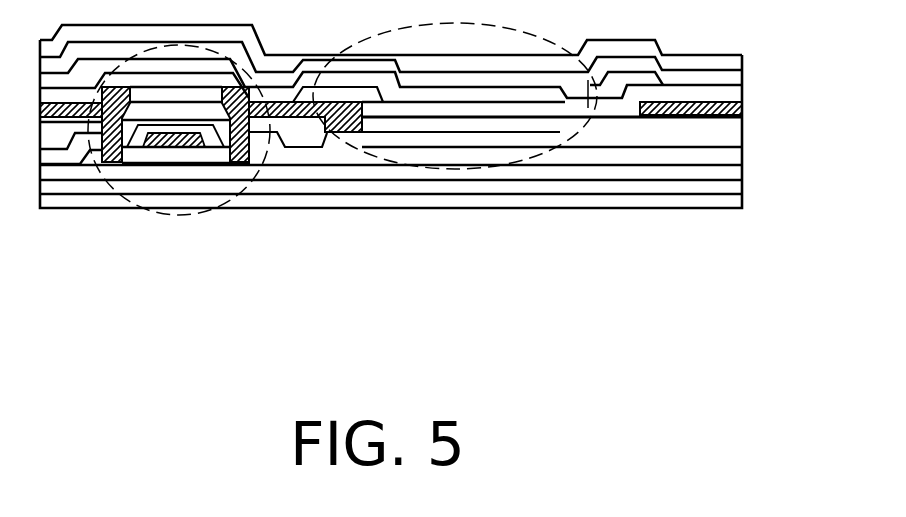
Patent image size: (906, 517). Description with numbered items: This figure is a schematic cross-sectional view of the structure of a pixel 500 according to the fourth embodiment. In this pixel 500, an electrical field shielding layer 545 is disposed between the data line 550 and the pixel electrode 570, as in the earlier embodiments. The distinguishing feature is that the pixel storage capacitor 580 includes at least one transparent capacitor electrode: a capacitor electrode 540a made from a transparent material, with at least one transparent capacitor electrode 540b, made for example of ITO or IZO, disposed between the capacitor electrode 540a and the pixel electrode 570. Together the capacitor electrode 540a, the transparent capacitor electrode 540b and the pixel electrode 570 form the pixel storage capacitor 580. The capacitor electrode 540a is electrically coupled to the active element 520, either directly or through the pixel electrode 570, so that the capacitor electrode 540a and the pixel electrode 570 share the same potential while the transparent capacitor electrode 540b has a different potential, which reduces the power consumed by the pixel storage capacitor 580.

The pixel 500 is at (812, 326).
The active element 520 is at (176, 200).
The electrical field shielding layer 545 is at (90, 200).
The data line 550 is at (705, 117).
The pixel electrode 570 is at (395, 56).
The pixel storage capacitor 580 is at (590, 80).
The capacitor electrode 540a is at (483, 148).
The transparent capacitor electrode 540b is at (446, 86).